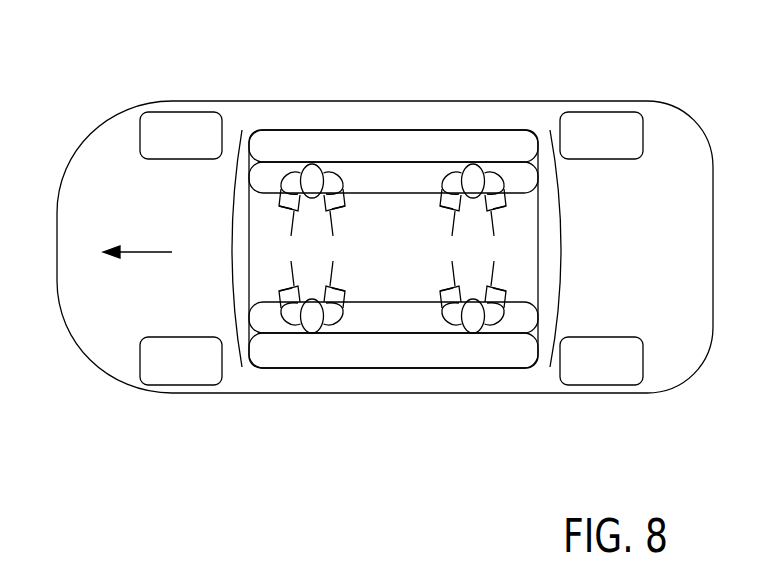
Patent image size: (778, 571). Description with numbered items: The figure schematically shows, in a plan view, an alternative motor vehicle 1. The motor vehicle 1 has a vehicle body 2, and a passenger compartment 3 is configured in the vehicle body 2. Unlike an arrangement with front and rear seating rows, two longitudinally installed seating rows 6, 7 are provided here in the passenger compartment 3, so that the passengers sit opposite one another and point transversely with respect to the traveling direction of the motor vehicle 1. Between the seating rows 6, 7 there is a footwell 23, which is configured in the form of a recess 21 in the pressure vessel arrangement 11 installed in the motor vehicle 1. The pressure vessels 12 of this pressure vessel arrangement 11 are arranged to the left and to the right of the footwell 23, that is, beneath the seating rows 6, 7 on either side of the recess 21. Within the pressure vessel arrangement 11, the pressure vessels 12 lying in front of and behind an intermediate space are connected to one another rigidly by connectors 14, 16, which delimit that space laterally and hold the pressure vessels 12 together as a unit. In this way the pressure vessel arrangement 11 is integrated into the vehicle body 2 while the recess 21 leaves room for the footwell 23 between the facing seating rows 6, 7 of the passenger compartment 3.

The motor vehicle 1 is at (82, 452).
The vehicle body 2 is at (228, 393).
The passenger compartment 3 is at (376, 183).
The seating row 6 is at (197, 184).
The seating row 7 is at (197, 312).
The pressure vessel arrangement 11 is at (299, 382).
The pressure vessel 12 is at (531, 128).
The connector 14 is at (250, 277).
The connector 16 is at (515, 245).
The recess 21 is at (368, 263).
The footwell 23 is at (515, 245).